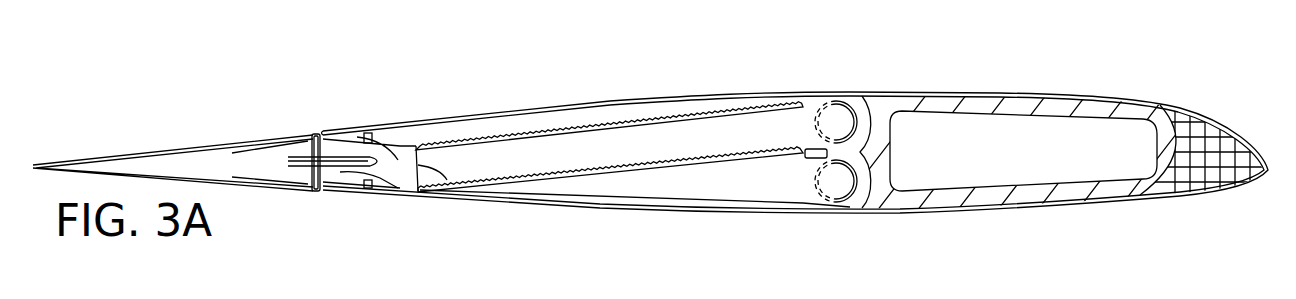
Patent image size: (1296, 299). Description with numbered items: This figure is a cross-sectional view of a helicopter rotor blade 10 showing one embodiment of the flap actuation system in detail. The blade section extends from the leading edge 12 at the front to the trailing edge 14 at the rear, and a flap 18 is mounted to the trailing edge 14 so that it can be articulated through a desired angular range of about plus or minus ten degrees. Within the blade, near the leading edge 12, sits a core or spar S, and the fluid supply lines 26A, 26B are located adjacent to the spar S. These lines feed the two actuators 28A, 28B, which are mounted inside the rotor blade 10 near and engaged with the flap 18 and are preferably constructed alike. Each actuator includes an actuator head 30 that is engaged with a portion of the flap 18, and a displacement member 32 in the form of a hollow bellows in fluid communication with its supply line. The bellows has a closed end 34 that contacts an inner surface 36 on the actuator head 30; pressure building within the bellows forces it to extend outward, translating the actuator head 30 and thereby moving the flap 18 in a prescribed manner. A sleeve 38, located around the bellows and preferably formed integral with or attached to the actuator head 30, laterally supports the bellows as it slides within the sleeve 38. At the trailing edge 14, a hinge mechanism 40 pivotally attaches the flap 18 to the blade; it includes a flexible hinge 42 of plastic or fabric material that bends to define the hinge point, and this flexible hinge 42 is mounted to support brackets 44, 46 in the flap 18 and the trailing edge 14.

The rotor blade 10 is at (1014, 73).
The leading edge 12 is at (1165, 108).
The trailing edge 14 is at (357, 127).
The flap 18 is at (190, 152).
The fluid supply line 26A is at (851, 102).
The fluid supply line 26B is at (857, 199).
The actuator 28A is at (661, 103).
The actuator 28B is at (722, 202).
The actuator head 30 is at (348, 173).
The displacement member 32 is at (605, 191).
The closed end 34 is at (425, 162).
The inner surface 36 is at (398, 160).
The sleeve 38 is at (573, 104).
The hinge mechanism 40 is at (300, 201).
The flexible hinge 42 is at (337, 158).
The support bracket 44 is at (279, 140).
The support bracket 46 is at (370, 197).
The spar S is at (951, 107).